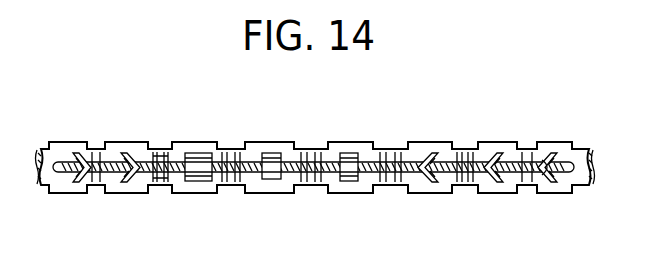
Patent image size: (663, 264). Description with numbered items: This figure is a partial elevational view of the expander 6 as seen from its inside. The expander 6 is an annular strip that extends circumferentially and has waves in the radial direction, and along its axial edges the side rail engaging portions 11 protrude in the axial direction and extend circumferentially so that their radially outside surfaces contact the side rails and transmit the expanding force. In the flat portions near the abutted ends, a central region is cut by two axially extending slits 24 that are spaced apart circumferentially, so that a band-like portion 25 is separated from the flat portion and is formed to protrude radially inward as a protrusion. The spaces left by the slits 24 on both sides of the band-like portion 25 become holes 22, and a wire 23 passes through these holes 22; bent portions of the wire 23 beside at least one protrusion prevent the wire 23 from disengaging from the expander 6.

The expander 6 is at (394, 150).
The side rail engaging portions 11 is at (274, 160).
The holes 22 is at (68, 157).
The wire 23 is at (156, 155).
The slits 24 is at (210, 176).
The band-like portion 25 is at (268, 179).